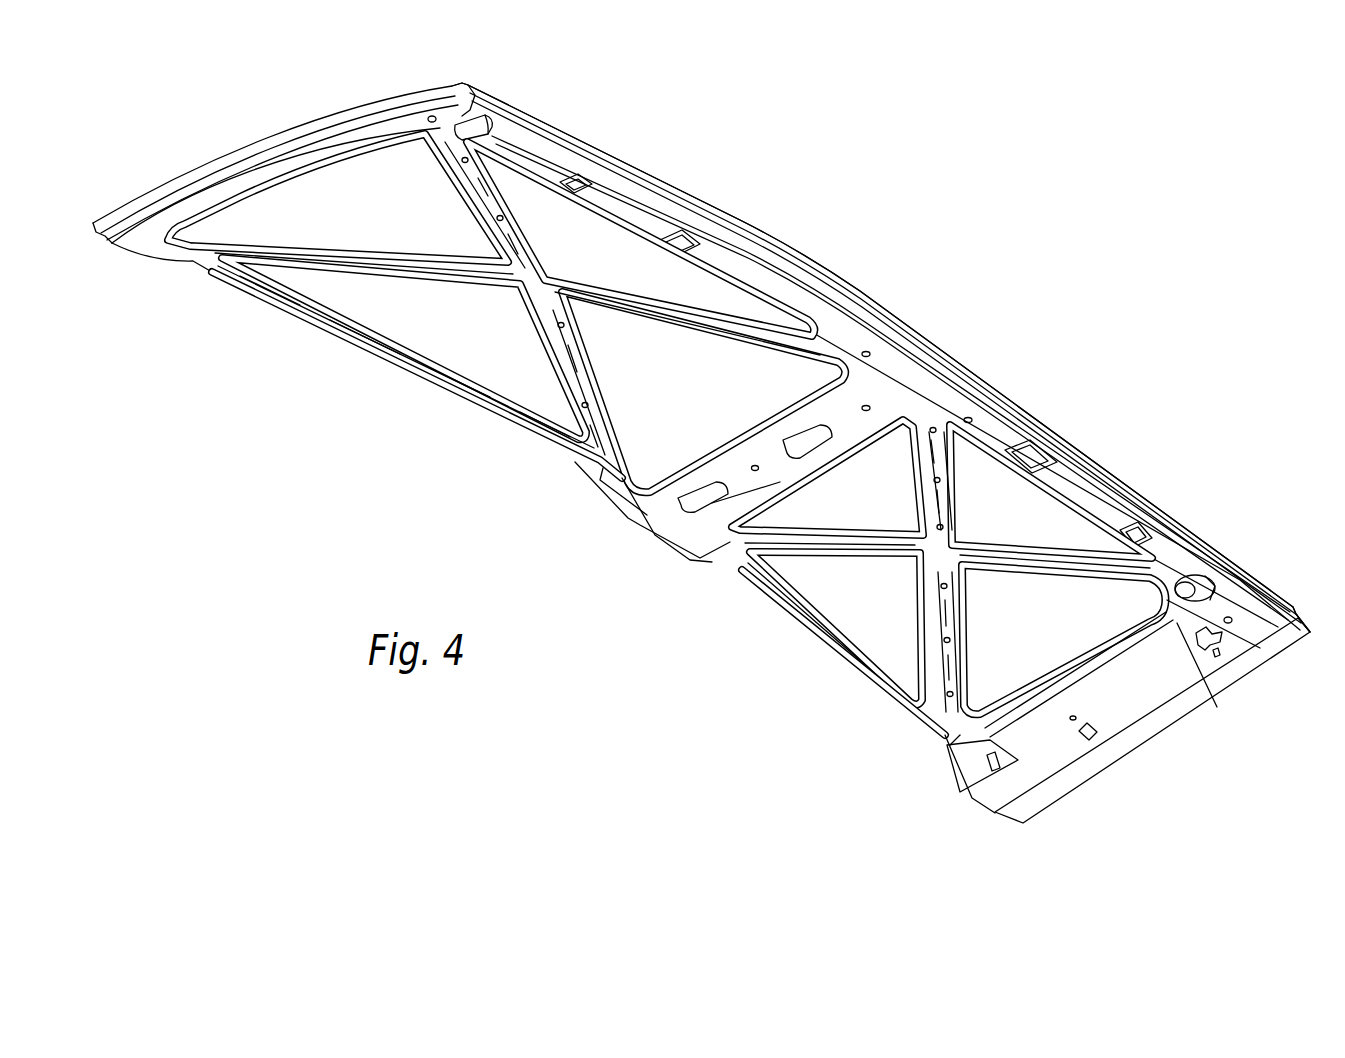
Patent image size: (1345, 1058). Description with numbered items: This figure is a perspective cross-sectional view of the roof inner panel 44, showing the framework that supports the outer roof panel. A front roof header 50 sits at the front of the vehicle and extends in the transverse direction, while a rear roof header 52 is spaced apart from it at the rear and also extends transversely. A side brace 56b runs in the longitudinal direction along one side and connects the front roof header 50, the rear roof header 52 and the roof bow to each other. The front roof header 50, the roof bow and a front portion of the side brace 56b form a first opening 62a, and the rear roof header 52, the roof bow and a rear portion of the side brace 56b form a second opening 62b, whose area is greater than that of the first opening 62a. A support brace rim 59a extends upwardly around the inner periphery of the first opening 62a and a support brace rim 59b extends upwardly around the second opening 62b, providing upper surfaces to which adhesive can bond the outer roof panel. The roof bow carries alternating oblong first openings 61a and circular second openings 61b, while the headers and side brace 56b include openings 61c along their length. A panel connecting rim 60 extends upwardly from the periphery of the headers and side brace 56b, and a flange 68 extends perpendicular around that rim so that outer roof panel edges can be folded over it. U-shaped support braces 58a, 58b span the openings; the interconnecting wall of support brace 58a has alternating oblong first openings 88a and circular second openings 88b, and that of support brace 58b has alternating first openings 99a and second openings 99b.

The roof inner panel 44 is at (280, 100).
The front roof header 50 is at (1053, 750).
The rear roof header 52 is at (213, 197).
The side brace 56b is at (905, 387).
The support brace 58a is at (1000, 580).
The support brace 58b is at (412, 262).
The support brace rim 59a is at (1073, 670).
The support brace rim 59b is at (618, 487).
The panel connecting rim 60 is at (684, 218).
The first openings 61a is at (797, 440).
The second openings 61b is at (873, 408).
The openings 61c is at (873, 350).
The first opening 62a is at (835, 600).
The second opening 62b is at (492, 352).
The flange 68 is at (633, 175).
The first openings 88a is at (745, 596).
The second openings 88b is at (675, 558).
The first openings 99a is at (313, 257).
The second openings 99b is at (247, 253).